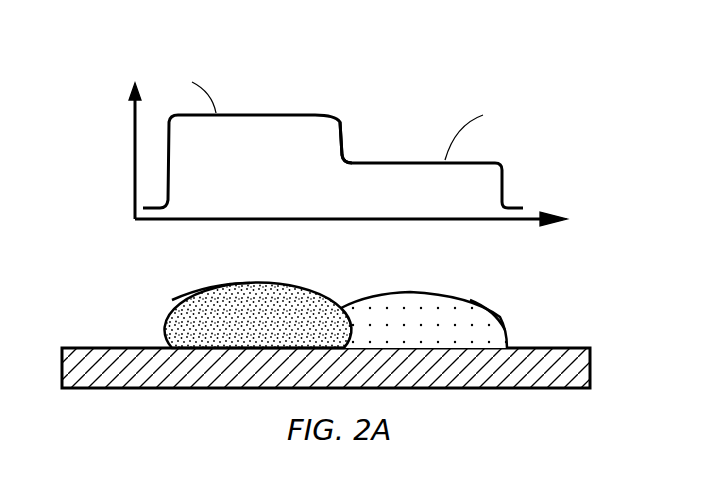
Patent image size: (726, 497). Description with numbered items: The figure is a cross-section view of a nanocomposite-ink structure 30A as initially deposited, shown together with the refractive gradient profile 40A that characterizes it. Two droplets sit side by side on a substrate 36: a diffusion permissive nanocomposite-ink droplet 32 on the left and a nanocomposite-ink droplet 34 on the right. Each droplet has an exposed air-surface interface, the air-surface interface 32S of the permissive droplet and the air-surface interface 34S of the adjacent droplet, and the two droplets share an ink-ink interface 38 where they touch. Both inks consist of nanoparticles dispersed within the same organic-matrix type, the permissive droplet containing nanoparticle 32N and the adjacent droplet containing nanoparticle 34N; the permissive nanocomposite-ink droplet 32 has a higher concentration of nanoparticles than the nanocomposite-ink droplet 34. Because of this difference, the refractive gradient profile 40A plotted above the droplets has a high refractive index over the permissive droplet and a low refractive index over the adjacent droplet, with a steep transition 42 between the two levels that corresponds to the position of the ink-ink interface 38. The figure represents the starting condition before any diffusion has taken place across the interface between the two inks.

The nanocomposite-ink structure 30A is at (382, 126).
The diffusion permissive nanocomposite-ink droplet 32 is at (268, 274).
The air-surface interface 32S is at (178, 300).
The nanoparticle 32N is at (255, 322).
The nanocomposite-ink droplet 34 is at (430, 283).
The air-surface interface 34S is at (495, 312).
The nanoparticle 34N is at (430, 322).
The substrate 36 is at (593, 372).
The ink-ink interface 38 is at (352, 312).
The refractive gradient profile 40A is at (282, 92).
The steep transition 42 is at (345, 143).